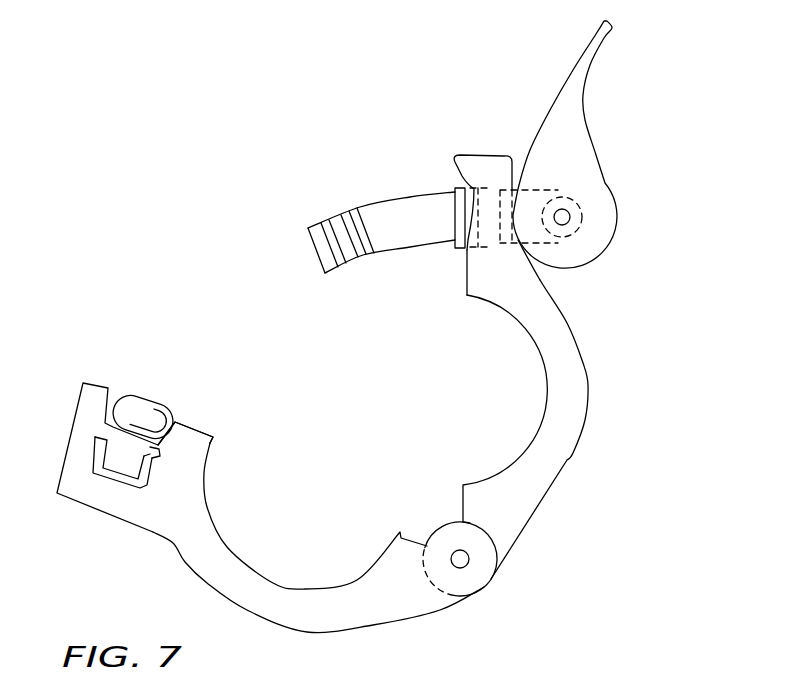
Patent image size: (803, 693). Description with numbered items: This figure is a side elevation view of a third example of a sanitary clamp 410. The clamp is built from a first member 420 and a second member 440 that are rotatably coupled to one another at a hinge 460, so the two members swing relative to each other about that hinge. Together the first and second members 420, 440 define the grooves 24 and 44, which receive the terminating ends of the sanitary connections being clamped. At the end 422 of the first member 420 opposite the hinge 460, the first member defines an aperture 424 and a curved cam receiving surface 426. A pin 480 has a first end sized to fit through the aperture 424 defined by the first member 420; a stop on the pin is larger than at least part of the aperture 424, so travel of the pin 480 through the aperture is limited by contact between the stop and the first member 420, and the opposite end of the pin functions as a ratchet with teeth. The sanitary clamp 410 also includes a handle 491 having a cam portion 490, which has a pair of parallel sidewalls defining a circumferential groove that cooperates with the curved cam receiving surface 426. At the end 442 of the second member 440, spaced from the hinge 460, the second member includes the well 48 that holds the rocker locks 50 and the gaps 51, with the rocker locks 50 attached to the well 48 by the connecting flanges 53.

The sanitary clamp 410 is at (237, 310).
The handle 491 is at (607, 37).
The cam portion 490 is at (600, 236).
The aperture 424 is at (447, 215).
The pin 480 is at (388, 252).
The end of the first member 422 is at (488, 283).
The curved cam receiving surface 426 is at (540, 278).
The first member 420 is at (567, 440).
The groove 24 is at (528, 427).
The hinge 460 is at (470, 560).
The second member 440 is at (325, 633).
The groove 44 is at (318, 578).
The well 48 is at (87, 513).
The end of the second member 442 is at (190, 423).
The rocker locks 50 is at (138, 395).
The gaps 51 is at (158, 475).
The connecting flanges 53 is at (163, 455).